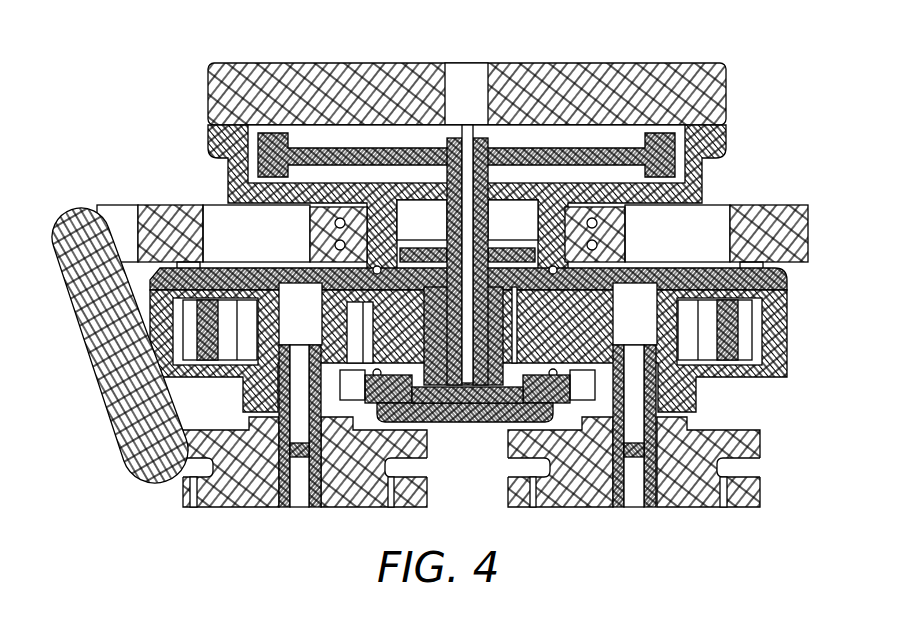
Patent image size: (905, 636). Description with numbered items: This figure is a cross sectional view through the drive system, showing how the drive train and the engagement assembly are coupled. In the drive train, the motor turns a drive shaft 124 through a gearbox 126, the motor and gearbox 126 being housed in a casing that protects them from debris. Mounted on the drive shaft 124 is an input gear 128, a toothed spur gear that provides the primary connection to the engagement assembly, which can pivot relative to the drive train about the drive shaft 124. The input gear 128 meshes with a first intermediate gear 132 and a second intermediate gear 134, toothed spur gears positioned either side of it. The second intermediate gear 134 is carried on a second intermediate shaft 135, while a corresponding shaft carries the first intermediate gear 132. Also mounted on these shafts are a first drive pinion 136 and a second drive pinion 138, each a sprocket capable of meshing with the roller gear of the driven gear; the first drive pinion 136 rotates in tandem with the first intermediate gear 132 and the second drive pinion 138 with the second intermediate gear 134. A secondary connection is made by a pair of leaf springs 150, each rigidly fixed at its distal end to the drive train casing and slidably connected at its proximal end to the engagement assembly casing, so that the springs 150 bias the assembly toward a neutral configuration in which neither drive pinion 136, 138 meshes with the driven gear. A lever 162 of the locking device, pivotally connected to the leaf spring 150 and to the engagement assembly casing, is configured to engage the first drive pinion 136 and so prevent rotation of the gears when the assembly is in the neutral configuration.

The drive shaft 124 is at (467, 94).
The gearbox 126 is at (667, 151).
The input gear 128 is at (467, 405).
The first intermediate gear 132 is at (203, 323).
The second intermediate gear 134 is at (730, 331).
The second intermediate shaft 135 is at (303, 450).
The first drive pinion 136 is at (250, 495).
The second drive pinion 138 is at (712, 493).
The leaf spring 150 is at (167, 213).
The lever 162 is at (110, 408).